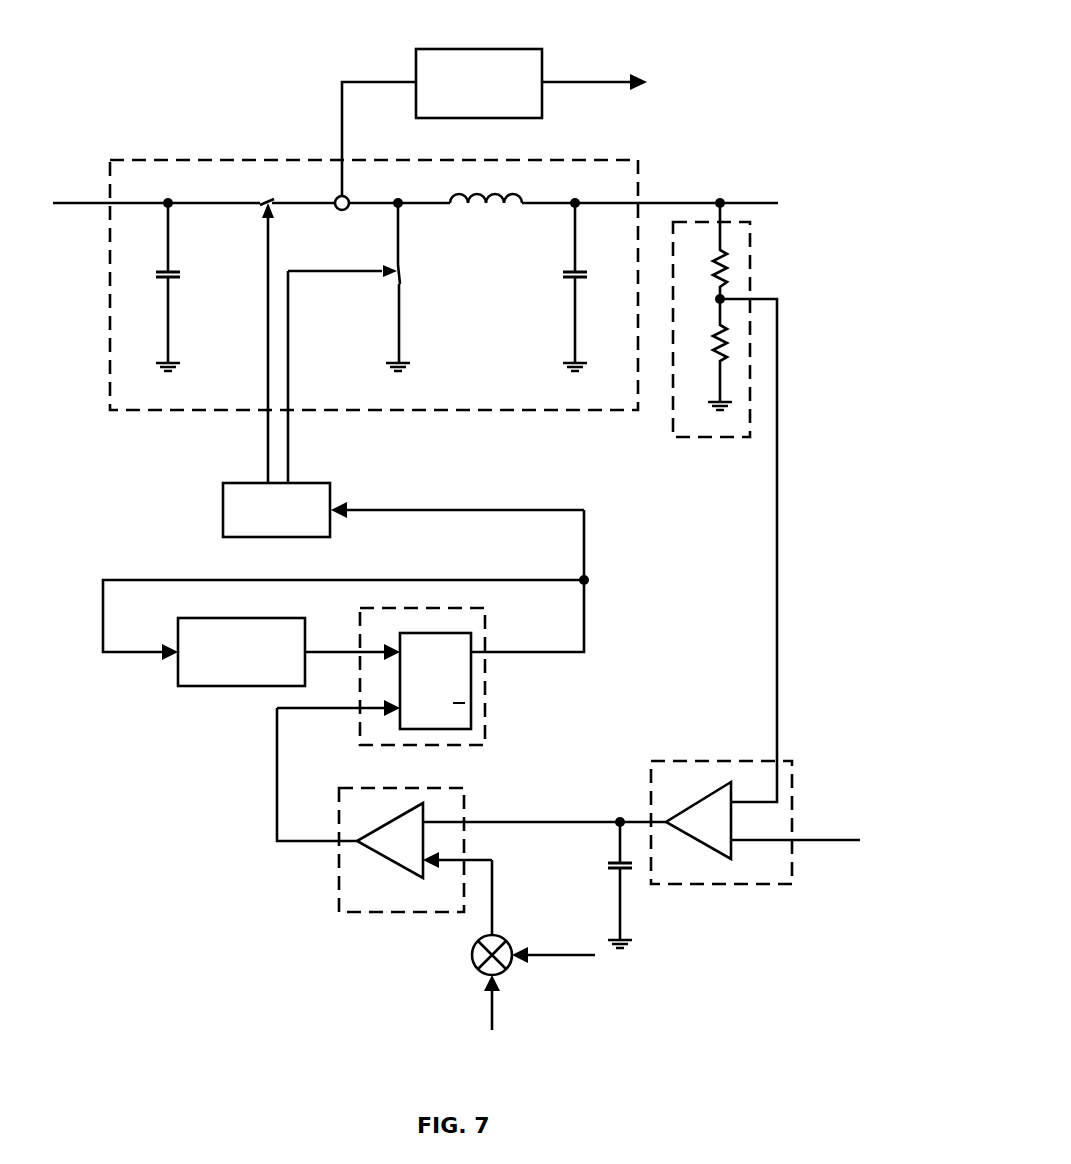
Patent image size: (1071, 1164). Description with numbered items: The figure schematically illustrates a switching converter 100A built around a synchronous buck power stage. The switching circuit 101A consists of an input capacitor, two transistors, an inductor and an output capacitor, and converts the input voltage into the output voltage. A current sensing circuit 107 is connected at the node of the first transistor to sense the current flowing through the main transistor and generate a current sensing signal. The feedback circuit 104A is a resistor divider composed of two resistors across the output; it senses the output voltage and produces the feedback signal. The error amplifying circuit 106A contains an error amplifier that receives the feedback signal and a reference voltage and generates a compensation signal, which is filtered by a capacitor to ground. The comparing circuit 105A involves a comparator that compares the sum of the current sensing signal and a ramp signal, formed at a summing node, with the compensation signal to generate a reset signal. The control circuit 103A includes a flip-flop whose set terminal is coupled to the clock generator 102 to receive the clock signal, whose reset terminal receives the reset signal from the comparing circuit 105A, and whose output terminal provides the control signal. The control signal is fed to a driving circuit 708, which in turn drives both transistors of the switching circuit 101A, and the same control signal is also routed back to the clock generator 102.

The switching converter 100A is at (749, 67).
The switching circuit 101A is at (148, 411).
The current sensing circuit 107 is at (440, 118).
The feedback circuit 104A is at (720, 437).
The driving circuit 708 is at (235, 537).
The clock generator 102 is at (205, 686).
The control circuit 103A is at (417, 745).
The comparing circuit 105A is at (365, 912).
The error amplifying circuit 106A is at (705, 884).